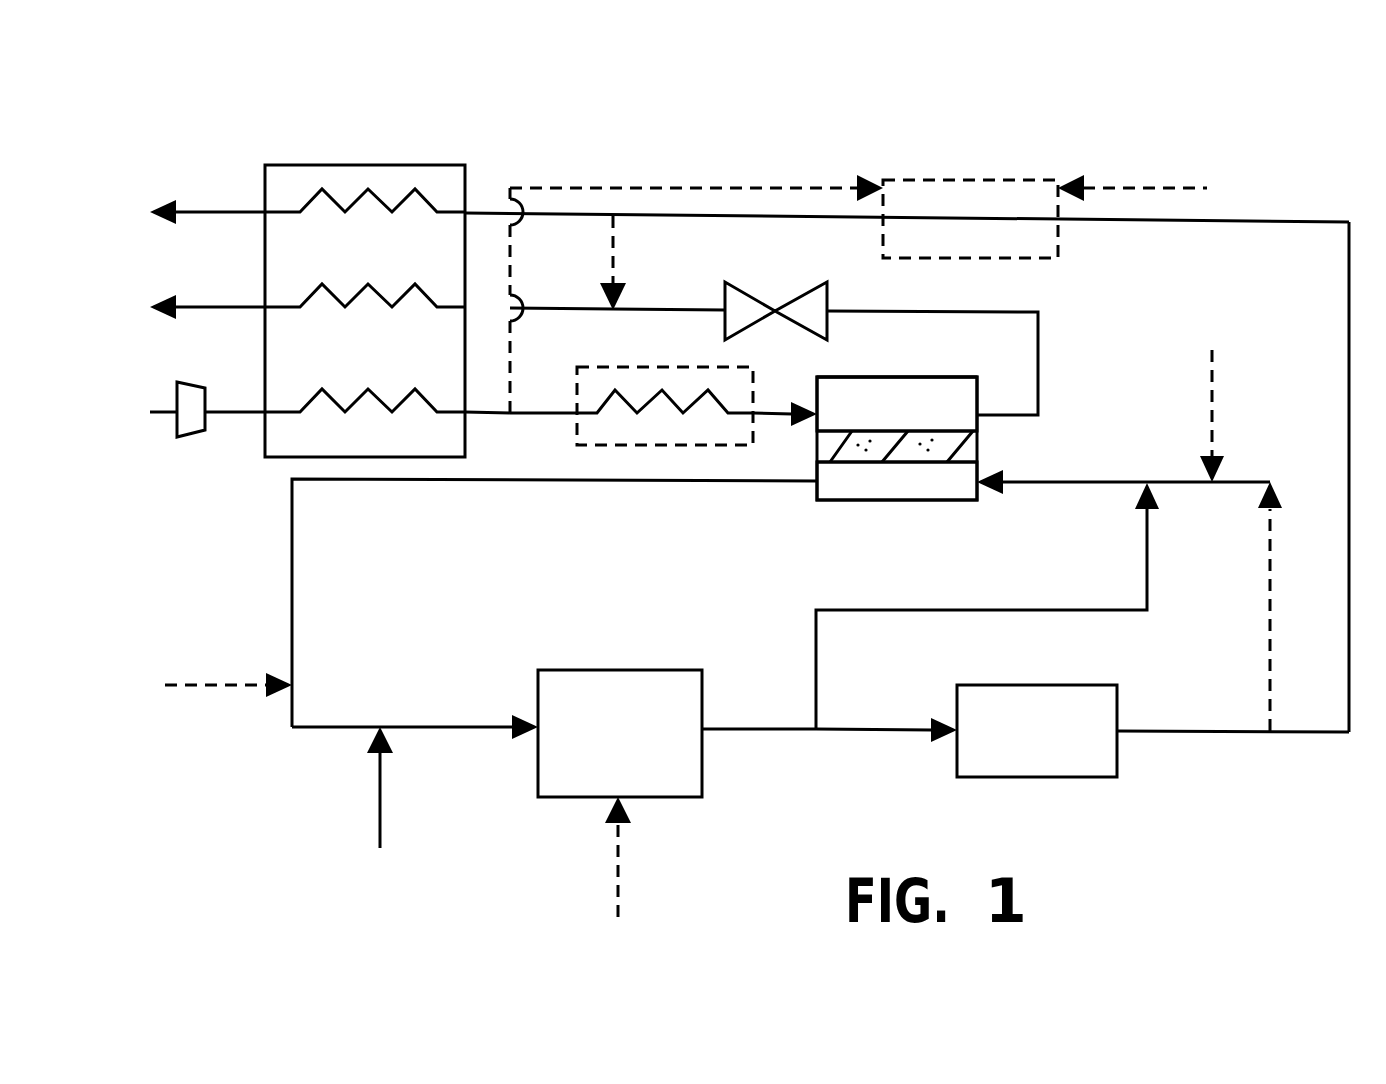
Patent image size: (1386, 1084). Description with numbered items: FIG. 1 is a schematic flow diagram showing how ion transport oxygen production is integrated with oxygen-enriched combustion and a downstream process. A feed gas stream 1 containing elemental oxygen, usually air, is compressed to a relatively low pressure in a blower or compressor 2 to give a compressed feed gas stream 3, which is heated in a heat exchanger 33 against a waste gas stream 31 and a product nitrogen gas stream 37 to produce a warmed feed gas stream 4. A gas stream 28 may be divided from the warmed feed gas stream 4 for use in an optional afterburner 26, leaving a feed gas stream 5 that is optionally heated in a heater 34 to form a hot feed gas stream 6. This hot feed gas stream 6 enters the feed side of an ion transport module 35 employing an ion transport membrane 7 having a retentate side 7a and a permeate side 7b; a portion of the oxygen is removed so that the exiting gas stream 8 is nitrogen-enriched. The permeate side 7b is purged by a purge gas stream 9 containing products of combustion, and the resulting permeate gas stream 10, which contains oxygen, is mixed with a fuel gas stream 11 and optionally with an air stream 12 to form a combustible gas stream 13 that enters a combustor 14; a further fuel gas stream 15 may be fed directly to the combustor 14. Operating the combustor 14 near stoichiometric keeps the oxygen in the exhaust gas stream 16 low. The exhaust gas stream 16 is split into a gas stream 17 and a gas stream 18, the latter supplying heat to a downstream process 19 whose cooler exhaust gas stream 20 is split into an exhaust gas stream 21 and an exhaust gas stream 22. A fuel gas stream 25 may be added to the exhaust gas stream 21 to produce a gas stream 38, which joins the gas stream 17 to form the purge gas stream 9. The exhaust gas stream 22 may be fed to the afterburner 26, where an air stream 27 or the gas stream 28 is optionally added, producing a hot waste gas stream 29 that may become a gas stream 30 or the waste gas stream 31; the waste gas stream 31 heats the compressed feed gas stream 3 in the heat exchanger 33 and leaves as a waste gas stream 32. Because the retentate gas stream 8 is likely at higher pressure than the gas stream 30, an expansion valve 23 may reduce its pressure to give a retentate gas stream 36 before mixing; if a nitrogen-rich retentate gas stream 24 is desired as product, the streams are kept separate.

The feed gas stream 1 is at (158, 411).
The blower or compressor 2 is at (193, 388).
The compressed feed gas stream 3 is at (220, 411).
The warmed feed gas stream 4 is at (490, 414).
The feed gas stream 5 is at (542, 413).
The hot feed gas stream 6 is at (773, 413).
The ion transport membrane 7 is at (980, 442).
The retentate side 7a is at (895, 431).
The permeate side 7b is at (900, 462).
The exiting gas stream 8 is at (1038, 377).
The purge gas stream 9 is at (1098, 483).
The permeate gas stream 10 is at (292, 532).
The fuel gas stream 11 is at (377, 805).
The air stream 12 is at (228, 686).
The combustible gas stream 13 is at (460, 727).
The combustor 14 is at (645, 668).
The fuel gas stream 15 is at (620, 883).
The exhaust gas stream 16 is at (748, 728).
The gas stream 17 is at (913, 608).
The gas stream 18 is at (877, 728).
The downstream process 19 is at (1093, 685).
The exhaust gas stream 20 is at (1213, 730).
The exhaust gas stream 21 is at (1270, 594).
The exhaust gas stream 22 is at (1349, 263).
The expansion valve 23 is at (827, 304).
The retentate gas stream 24 is at (226, 307).
The fuel gas stream 25 is at (1212, 351).
The afterburner 26 is at (998, 180).
The air stream 27 is at (1156, 189).
The gas stream 28 is at (747, 186).
The hot waste gas stream 29 is at (822, 219).
The gas stream 30 is at (618, 272).
The waste gas stream 31 is at (556, 212).
The waste gas stream 32 is at (227, 212).
The heat exchanger 33 is at (413, 457).
The heater 34 is at (692, 367).
The ion transport module 35 is at (847, 377).
The retentate gas stream 36 is at (695, 310).
The product nitrogen gas stream 37 is at (558, 309).
The gas stream 38 is at (1185, 484).